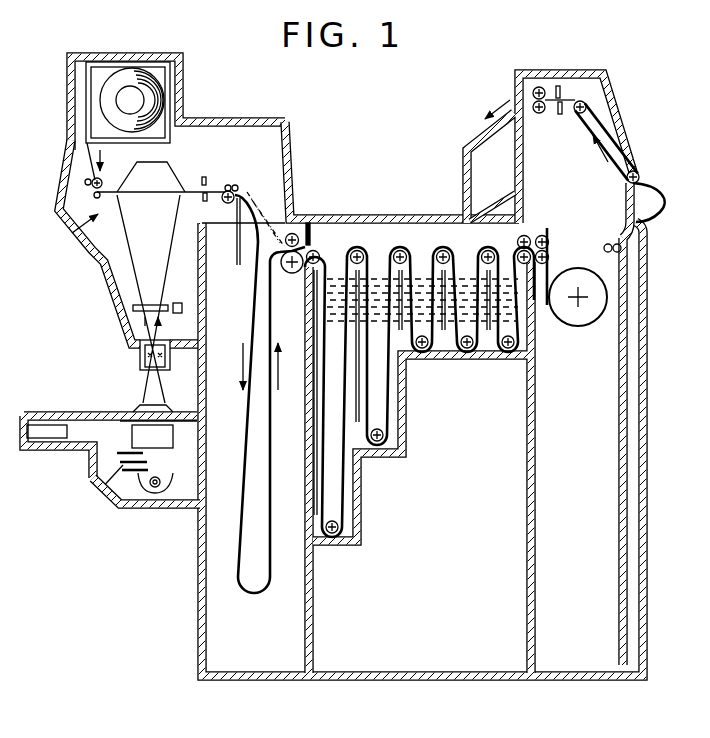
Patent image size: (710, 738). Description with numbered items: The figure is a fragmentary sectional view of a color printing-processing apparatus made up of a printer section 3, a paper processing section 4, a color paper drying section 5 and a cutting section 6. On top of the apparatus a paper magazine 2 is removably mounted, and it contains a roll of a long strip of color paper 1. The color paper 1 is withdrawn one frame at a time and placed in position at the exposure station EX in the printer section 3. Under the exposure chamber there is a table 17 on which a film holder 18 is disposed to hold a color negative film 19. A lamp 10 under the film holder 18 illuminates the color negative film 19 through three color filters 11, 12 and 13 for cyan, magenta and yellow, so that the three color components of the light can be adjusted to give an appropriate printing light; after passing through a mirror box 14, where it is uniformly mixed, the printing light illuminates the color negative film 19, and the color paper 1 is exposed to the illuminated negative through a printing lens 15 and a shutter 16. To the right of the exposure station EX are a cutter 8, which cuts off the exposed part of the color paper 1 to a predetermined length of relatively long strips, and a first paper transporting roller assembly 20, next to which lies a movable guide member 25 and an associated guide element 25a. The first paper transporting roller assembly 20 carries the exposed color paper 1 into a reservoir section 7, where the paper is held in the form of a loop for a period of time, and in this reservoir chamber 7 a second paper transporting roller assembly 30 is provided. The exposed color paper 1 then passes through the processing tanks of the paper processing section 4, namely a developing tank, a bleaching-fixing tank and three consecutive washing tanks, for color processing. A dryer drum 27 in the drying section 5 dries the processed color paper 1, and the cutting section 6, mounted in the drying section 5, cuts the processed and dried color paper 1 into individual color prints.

The color paper 1 is at (106, 77).
The paper magazine 2 is at (184, 82).
The printer section 3 is at (73, 238).
The paper processing section 4 is at (413, 242).
The color paper drying section 5 is at (605, 397).
The cutting section 6 is at (578, 71).
The reservoir section 7 is at (272, 206).
The cutter 8 is at (204, 177).
The lamp 10 is at (155, 493).
The color filter 11 is at (100, 490).
The color filter 12 is at (110, 466).
The color filter 13 is at (110, 453).
The mirror box 14 is at (170, 437).
The printing lens 15 is at (140, 356).
The shutter 16 is at (133, 306).
The table 17 is at (40, 411).
The film holder 18 is at (125, 410).
The color negative film 19 is at (143, 405).
The first paper transporting roller assembly 20 is at (232, 178).
The movable guide member 25 is at (238, 268).
The guide belt 25a is at (247, 191).
The dryer drum 27 is at (578, 327).
The second paper transporting roller assembly 30 is at (310, 221).
The exposure station EX is at (162, 183).